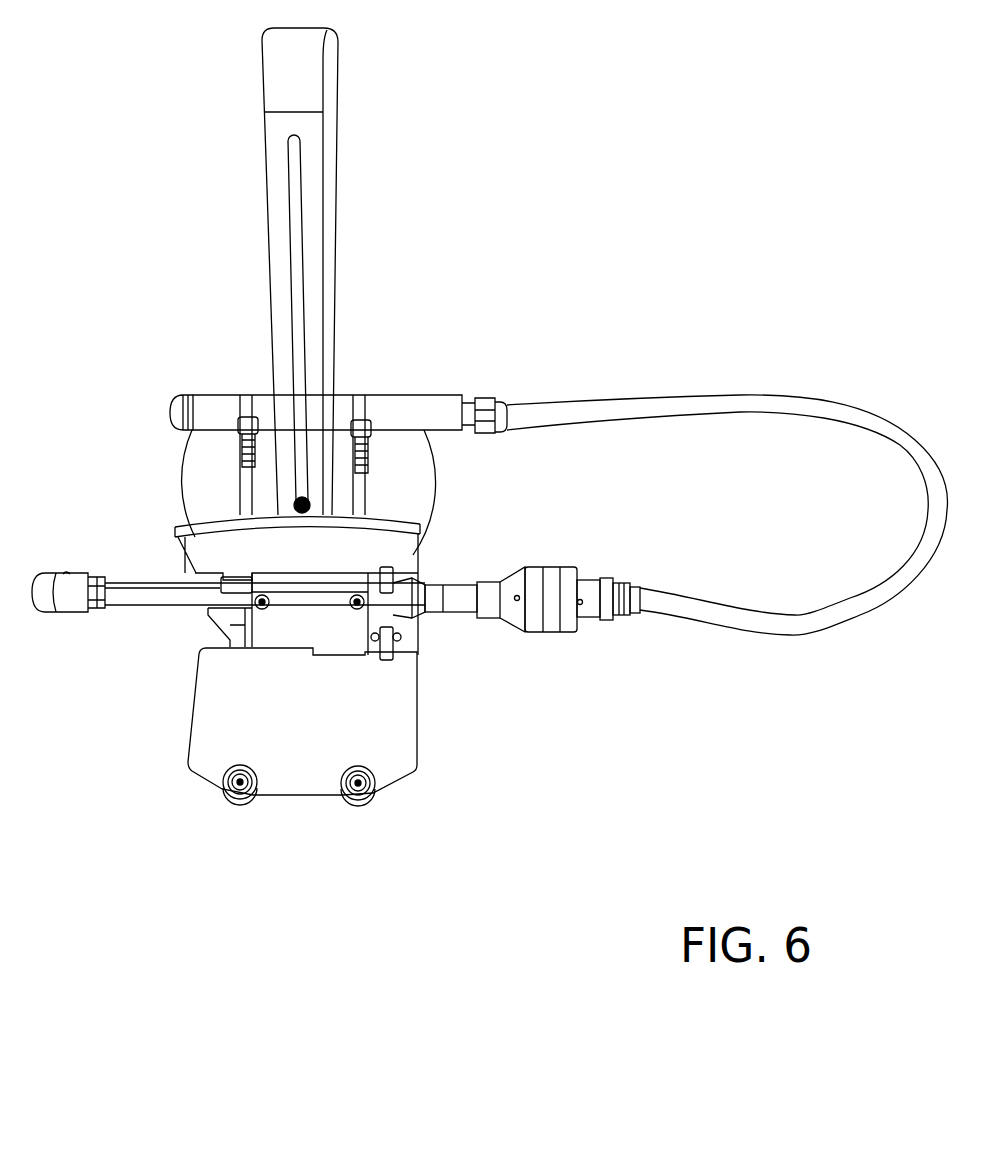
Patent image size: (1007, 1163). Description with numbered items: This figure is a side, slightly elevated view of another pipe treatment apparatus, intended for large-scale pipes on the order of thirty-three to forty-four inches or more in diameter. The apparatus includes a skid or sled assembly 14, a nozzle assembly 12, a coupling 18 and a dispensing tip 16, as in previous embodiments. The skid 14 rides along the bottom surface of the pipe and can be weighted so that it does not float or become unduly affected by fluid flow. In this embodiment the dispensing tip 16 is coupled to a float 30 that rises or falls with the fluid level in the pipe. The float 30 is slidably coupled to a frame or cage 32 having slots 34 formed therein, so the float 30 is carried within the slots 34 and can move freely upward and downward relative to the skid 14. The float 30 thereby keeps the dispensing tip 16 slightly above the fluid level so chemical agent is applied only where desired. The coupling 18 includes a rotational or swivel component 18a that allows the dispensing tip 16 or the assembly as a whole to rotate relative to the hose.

The nozzle assembly 12 is at (552, 618).
The skid or sled assembly 14 is at (405, 702).
The dispensing tip 16 is at (190, 393).
The coupling 18 is at (67, 598).
The swivel component 18a is at (47, 573).
The float 30 is at (192, 460).
The frame or cage 32 is at (275, 182).
The slots 34 is at (293, 297).